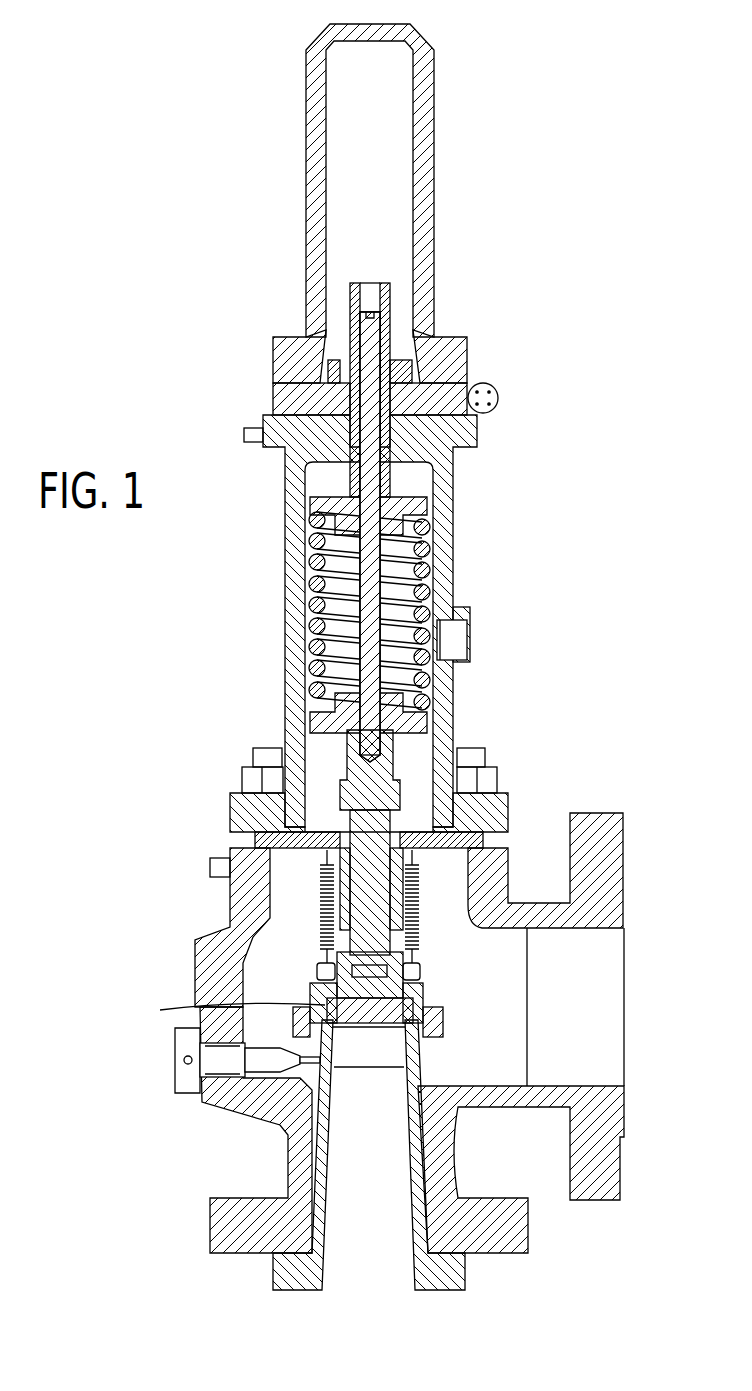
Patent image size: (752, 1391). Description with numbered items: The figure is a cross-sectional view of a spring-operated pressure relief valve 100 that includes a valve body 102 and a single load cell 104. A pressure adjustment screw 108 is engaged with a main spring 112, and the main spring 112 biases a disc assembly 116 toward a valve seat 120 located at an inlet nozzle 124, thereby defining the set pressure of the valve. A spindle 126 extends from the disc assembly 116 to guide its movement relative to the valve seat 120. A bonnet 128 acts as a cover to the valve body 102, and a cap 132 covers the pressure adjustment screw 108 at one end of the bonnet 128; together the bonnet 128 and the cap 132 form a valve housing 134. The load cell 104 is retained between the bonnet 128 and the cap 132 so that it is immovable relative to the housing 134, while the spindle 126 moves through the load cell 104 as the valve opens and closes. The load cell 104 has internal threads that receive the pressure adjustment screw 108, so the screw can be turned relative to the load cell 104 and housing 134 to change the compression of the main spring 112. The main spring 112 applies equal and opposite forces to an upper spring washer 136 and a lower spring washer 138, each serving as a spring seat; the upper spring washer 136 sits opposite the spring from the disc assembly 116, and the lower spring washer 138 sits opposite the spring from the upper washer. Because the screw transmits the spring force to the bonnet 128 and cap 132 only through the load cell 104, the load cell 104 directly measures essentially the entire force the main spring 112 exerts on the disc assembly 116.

The spring-operated pressure relief valve 100 is at (205, 100).
The valve body 102 is at (197, 940).
The load cell 104 is at (273, 400).
The pressure adjustment screw 108 is at (355, 293).
The main spring 112 is at (317, 625).
The disc assembly 116 is at (450, 995).
The valve seat 120 is at (325, 1022).
The inlet nozzle 124 is at (372, 1272).
The spindle 126 is at (360, 738).
The bonnet 128 is at (285, 492).
The cap 132 is at (434, 183).
The valve housing 134 is at (505, 325).
The upper spring washer 136 is at (427, 507).
The lower spring washer 138 is at (427, 725).